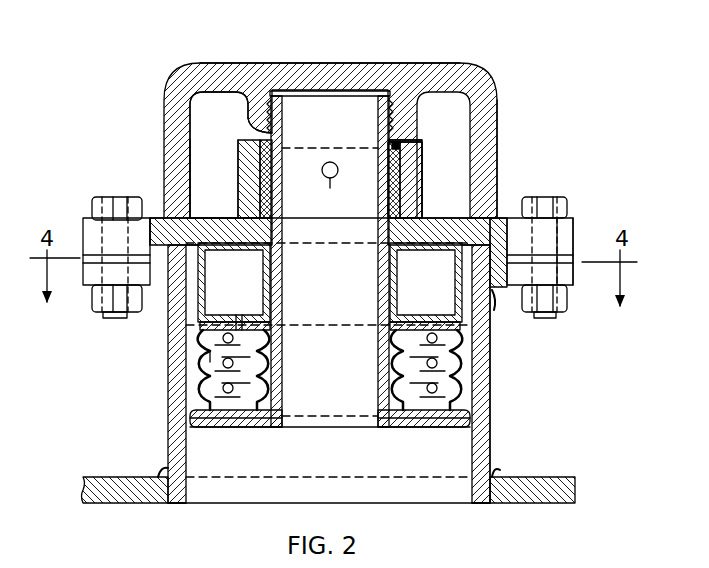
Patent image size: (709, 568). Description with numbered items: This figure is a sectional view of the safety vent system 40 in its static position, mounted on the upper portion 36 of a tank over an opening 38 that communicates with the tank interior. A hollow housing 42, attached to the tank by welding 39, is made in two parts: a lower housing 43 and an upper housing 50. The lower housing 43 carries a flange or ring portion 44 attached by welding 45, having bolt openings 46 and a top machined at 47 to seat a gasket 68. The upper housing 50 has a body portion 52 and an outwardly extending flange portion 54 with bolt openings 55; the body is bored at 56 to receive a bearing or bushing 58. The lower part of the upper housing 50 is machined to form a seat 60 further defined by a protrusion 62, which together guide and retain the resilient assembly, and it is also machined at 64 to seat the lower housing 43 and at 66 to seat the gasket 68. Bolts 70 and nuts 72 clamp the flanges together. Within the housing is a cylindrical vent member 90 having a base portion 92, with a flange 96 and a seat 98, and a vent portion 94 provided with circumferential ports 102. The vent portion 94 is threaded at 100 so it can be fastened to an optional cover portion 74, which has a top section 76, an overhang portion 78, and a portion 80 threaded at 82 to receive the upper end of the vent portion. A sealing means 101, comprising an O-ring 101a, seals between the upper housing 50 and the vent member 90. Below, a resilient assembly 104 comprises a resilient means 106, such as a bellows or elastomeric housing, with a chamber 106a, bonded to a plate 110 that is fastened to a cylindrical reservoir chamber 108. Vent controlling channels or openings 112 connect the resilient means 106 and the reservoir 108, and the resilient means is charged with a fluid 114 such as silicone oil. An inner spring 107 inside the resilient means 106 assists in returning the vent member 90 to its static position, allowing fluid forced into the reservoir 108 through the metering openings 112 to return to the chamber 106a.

The upper portion 36 is at (560, 478).
The opening 38 is at (170, 496).
The welding 39 is at (162, 470).
The safety vent system 40 is at (545, 378).
The housing 42 is at (491, 443).
The lower housing 43 is at (491, 420).
The flange or ring portion 44 is at (577, 277).
The welding 45 is at (496, 297).
The bolt openings 46 is at (578, 312).
The machined seat 47 is at (576, 244).
The upper housing 50 is at (428, 190).
The body portion 52 is at (432, 167).
The flange portion 54 is at (576, 234).
The bolt openings 55 is at (577, 214).
The bore 56 is at (402, 146).
The bearing or bushing 58 is at (390, 210).
The seat 60 is at (546, 197).
The protrusion 62 is at (153, 250).
The machined seat 64 is at (502, 210).
The machined seat 66 is at (113, 253).
The gasket 68 is at (90, 250).
The bolts 70 is at (562, 204).
The nuts 72 is at (542, 320).
The cover portion 74 is at (486, 70).
The top section 76 is at (430, 64).
The overhang portion 78 is at (500, 138).
The threaded portion 80 is at (247, 116).
The threads 82 is at (275, 112).
The vent member 90 is at (362, 382).
The base portion 92 is at (421, 430).
The vent portion 94 is at (374, 297).
The flange 96 is at (462, 430).
The seat 98 is at (405, 430).
The threads 100 is at (270, 134).
The sealing means 101 is at (212, 137).
The O-ring 101a is at (246, 148).
The openings or ports 102 is at (283, 168).
The resilient assembly 104 is at (200, 374).
The resilient means 106 is at (200, 394).
The chamber 106a is at (198, 362).
The inner spring 107 is at (214, 428).
The reservoir chamber 108 is at (258, 265).
The plate 110 is at (258, 344).
The vent controlling channel or opening 112 is at (240, 320).
The fluid 114 is at (249, 428).